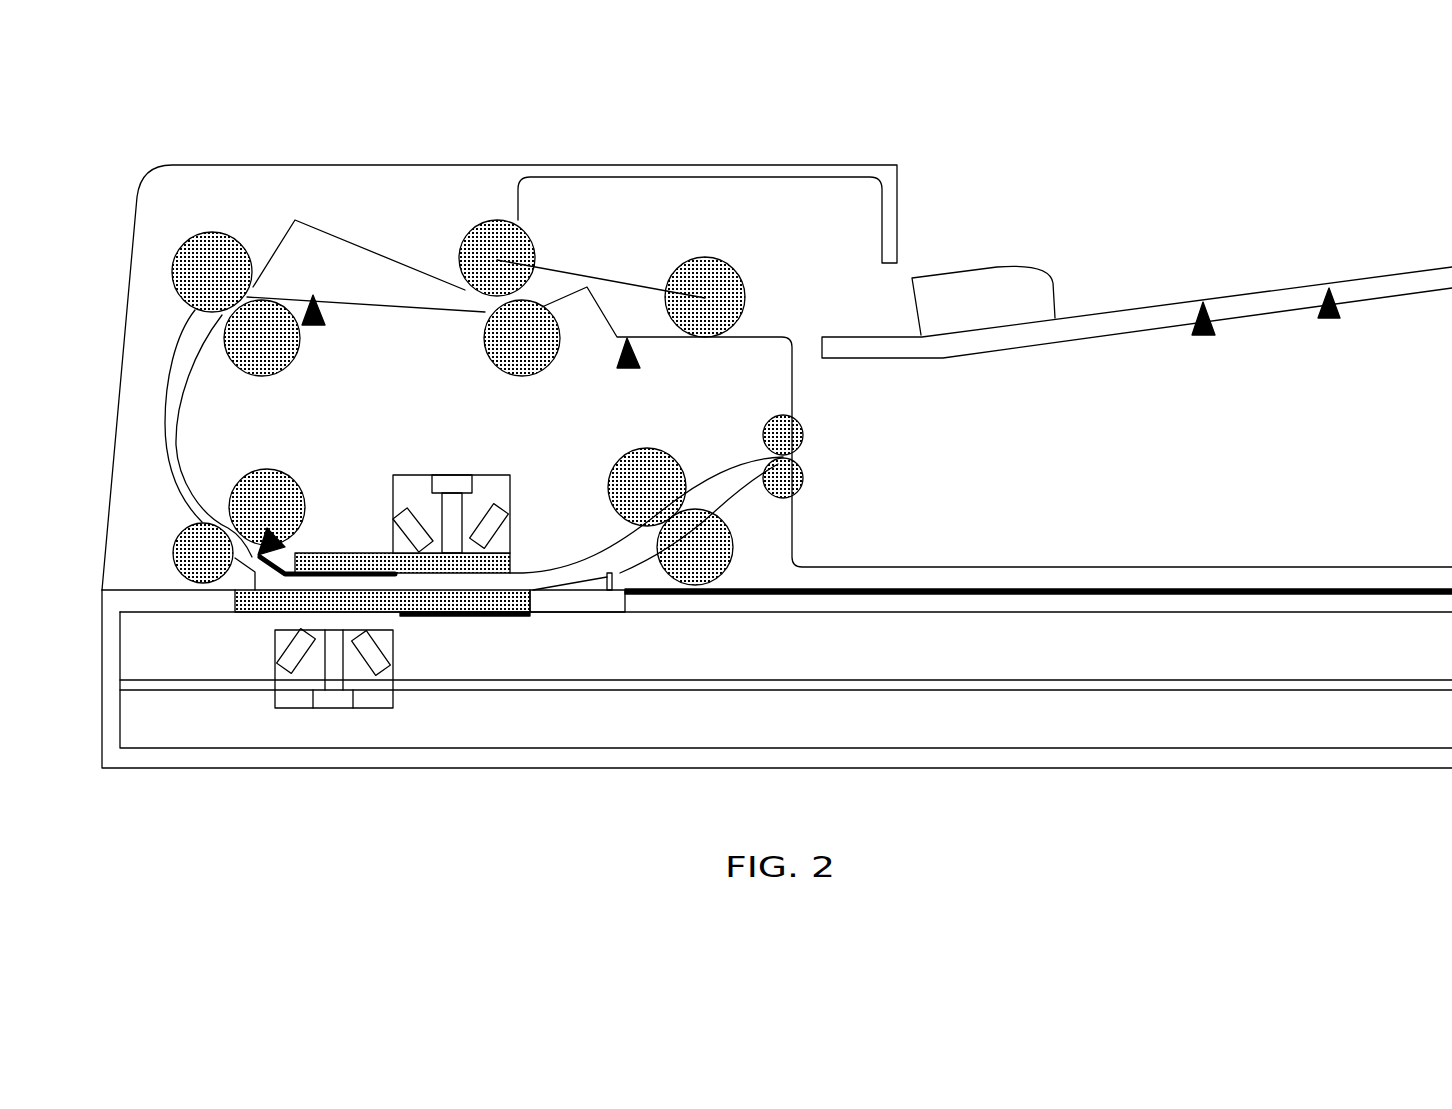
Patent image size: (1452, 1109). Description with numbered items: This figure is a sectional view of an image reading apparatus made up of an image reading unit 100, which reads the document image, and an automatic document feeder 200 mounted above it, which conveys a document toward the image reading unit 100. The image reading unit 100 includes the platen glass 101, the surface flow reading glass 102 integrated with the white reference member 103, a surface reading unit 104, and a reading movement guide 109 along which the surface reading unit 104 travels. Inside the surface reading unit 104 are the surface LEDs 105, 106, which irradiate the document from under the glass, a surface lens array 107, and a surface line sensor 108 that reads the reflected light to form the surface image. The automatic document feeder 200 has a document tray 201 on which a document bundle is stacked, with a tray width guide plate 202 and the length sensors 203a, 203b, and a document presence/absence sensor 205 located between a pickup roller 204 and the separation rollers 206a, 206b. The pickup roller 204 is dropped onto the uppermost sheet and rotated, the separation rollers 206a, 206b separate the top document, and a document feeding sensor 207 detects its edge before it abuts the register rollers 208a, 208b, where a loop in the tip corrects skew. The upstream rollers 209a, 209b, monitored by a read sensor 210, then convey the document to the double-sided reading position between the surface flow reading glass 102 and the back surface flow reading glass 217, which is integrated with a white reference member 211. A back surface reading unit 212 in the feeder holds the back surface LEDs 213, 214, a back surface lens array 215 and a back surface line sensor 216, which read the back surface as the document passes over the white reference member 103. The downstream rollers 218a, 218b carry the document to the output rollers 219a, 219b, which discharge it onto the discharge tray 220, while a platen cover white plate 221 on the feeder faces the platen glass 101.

The image reading unit 100 is at (215, 772).
The platen glass 101 is at (1011, 614).
The surface flow reading glass 102 is at (261, 612).
The white reference member 103 is at (500, 618).
The surface reading unit 104 is at (369, 712).
The surface LED 105 is at (286, 650).
The surface LED 106 is at (381, 642).
The surface lens array 107 is at (320, 676).
The surface line sensor 108 is at (323, 710).
The reading movement guide 109 is at (863, 679).
The automatic document feeder 200 is at (278, 163).
The document tray 201 is at (1236, 293).
The tray width guide plate 202 is at (960, 271).
The length sensor 203a is at (1204, 336).
The length sensor 203b is at (1329, 320).
The pickup roller 204 is at (731, 266).
The document presence/absence sensor 205 is at (624, 369).
The separation roller 206a is at (494, 223).
The separation roller 206b is at (482, 326).
The document feeding sensor 207 is at (320, 333).
The register roller 208a is at (212, 231).
The register roller 208b is at (266, 380).
The upstream roller 209a is at (264, 470).
The upstream roller 209b is at (176, 535).
The read sensor 210 is at (270, 503).
The white reference member 211 is at (357, 570).
The back surface reading unit 212 is at (482, 470).
The back surface LED 213 is at (408, 503).
The back surface LED 214 is at (499, 504).
The back surface lens array 215 is at (465, 500).
The back surface line sensor 216 is at (448, 470).
The back surface flow reading glass 217 is at (518, 562).
The downstream roller 218a is at (653, 447).
The downstream roller 218b is at (736, 538).
The output roller 219a is at (805, 435).
The output roller 219b is at (805, 478).
The discharge tray 220 is at (941, 565).
The platen cover white plate 221 is at (1070, 587).